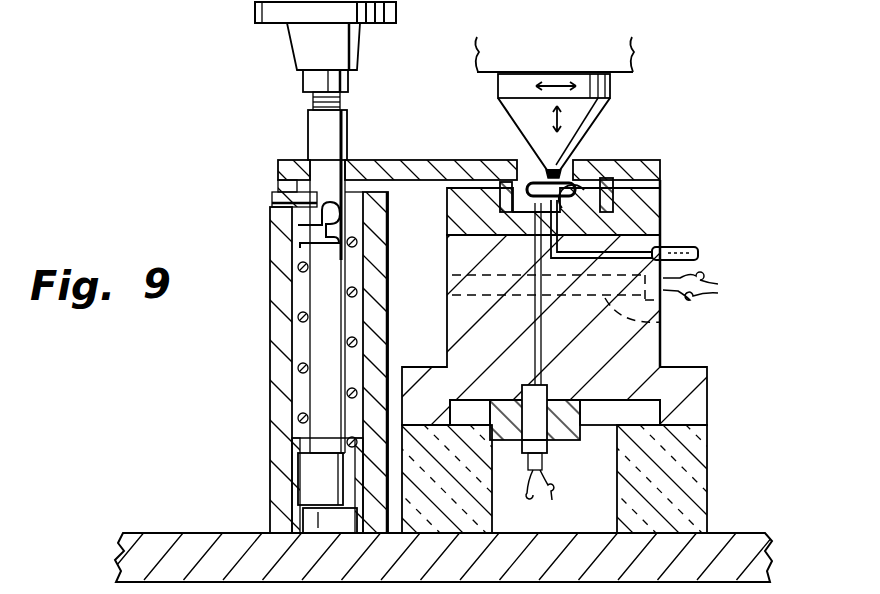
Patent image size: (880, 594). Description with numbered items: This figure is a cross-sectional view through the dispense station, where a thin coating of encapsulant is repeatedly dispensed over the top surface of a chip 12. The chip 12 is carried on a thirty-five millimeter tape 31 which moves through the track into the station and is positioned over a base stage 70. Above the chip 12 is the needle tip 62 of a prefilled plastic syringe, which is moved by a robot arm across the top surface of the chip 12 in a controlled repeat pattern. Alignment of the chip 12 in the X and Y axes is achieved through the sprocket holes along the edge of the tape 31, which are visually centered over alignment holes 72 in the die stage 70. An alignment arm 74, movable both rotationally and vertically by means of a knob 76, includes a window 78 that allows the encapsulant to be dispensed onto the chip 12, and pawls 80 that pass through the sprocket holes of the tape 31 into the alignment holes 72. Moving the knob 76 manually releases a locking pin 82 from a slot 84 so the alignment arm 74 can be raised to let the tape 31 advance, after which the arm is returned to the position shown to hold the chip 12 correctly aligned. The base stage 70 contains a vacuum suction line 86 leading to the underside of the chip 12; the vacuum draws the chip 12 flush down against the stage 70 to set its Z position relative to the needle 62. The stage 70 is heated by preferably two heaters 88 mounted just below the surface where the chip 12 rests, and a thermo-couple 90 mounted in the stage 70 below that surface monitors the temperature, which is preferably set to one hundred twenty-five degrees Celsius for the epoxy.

The chip 12 is at (603, 160).
The tape 31 is at (663, 196).
The needle tip 62 is at (550, 157).
The base stage 70 is at (663, 225).
The alignment holes 72 is at (462, 217).
The alignment arm 74 is at (375, 160).
The knob 76 is at (255, 18).
The window 78 is at (518, 162).
The pawls 80 is at (473, 162).
The locking pin 82 is at (272, 203).
The slot 84 is at (295, 252).
The vacuum suction line 86 is at (700, 250).
The heaters 88 is at (660, 322).
The thermo-couple 90 is at (540, 345).